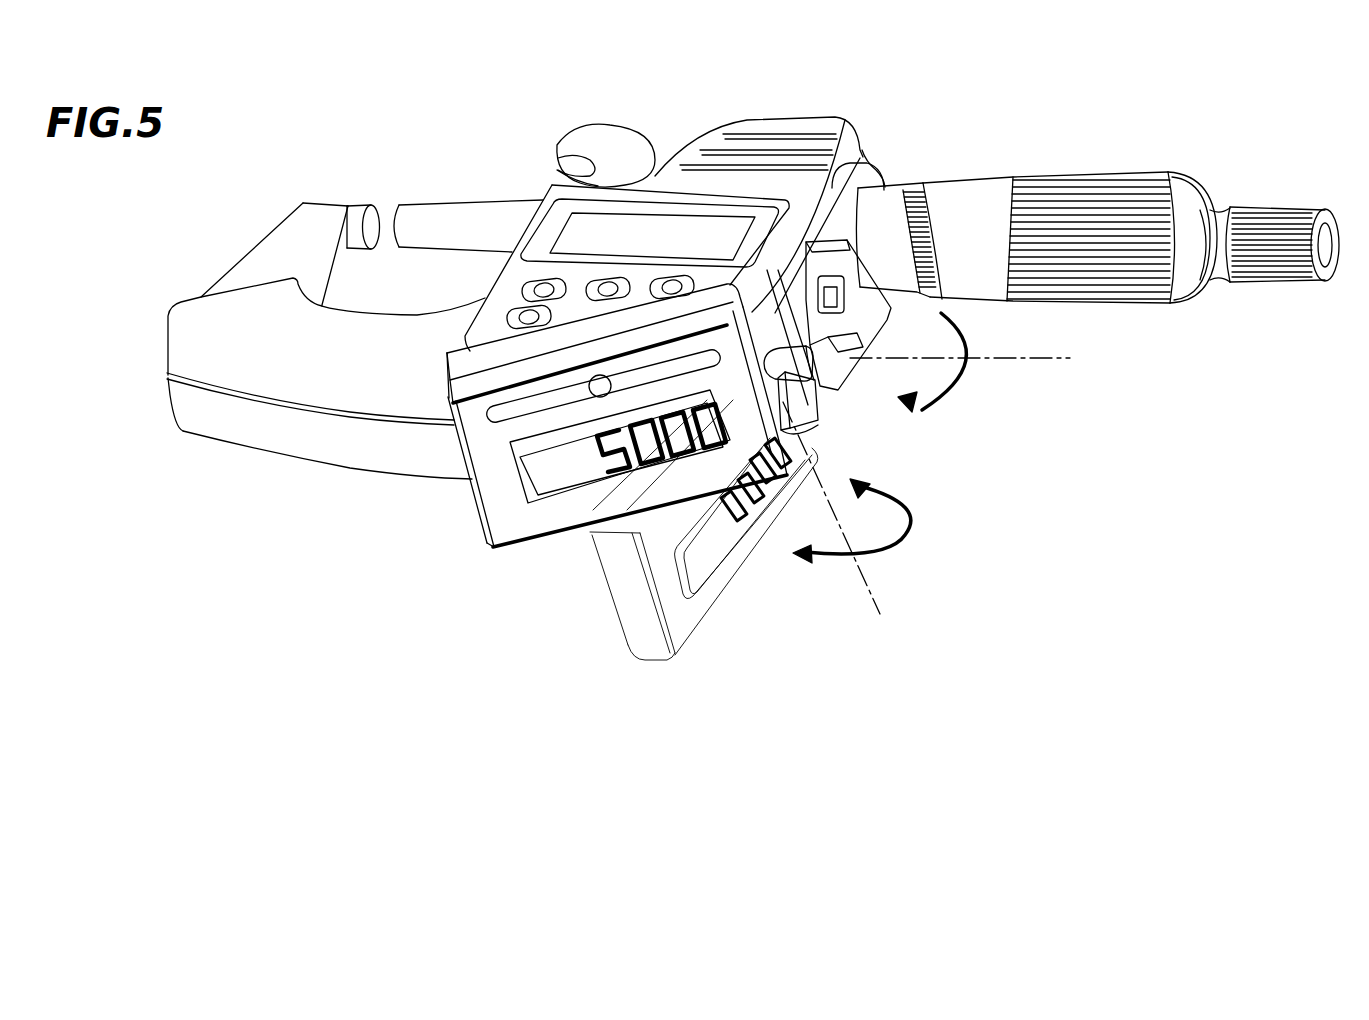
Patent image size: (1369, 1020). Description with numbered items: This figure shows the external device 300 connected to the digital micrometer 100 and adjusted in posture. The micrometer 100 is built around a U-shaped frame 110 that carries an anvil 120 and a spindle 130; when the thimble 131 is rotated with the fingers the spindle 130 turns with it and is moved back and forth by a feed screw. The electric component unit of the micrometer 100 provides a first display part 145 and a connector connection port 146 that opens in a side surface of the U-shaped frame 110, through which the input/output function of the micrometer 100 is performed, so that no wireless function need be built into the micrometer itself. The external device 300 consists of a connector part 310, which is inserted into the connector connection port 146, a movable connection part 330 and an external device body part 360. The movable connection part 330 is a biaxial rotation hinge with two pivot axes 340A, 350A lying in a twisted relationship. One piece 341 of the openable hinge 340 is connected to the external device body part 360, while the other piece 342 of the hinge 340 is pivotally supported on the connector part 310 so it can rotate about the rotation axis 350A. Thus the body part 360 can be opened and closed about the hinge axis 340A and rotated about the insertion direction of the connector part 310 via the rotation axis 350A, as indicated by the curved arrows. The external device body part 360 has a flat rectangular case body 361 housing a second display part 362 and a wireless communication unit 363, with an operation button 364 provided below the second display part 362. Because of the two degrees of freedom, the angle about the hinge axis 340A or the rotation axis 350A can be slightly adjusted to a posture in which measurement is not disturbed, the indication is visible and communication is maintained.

The micrometer 100 is at (910, 112).
The U-shaped frame 110 is at (272, 452).
The anvil 120 is at (362, 205).
The spindle 130 is at (427, 212).
The thimble 131 is at (1103, 172).
The first display part 145 is at (675, 220).
The connector connection port 146 is at (907, 534).
The external device 300 is at (613, 640).
The connector part 310 is at (882, 318).
The movable connection part 330 is at (917, 467).
The openable hinge 340 is at (820, 413).
The hinge axis 340A is at (873, 598).
The one piece of the openable hinge 341 is at (797, 434).
The other piece of the openable hinge 342 is at (815, 384).
The rotation axis 350A is at (1060, 360).
The external device body part 360 is at (487, 503).
The case body 361 is at (498, 530).
The second display part 362 is at (553, 488).
The wireless communication unit 363 is at (463, 483).
The operation button 364 is at (597, 397).